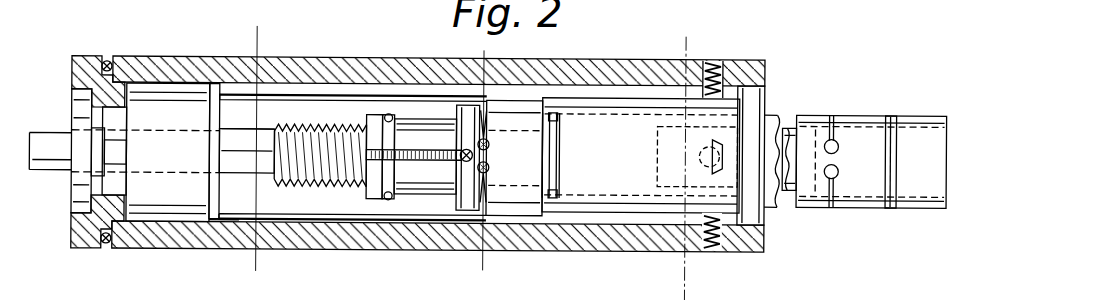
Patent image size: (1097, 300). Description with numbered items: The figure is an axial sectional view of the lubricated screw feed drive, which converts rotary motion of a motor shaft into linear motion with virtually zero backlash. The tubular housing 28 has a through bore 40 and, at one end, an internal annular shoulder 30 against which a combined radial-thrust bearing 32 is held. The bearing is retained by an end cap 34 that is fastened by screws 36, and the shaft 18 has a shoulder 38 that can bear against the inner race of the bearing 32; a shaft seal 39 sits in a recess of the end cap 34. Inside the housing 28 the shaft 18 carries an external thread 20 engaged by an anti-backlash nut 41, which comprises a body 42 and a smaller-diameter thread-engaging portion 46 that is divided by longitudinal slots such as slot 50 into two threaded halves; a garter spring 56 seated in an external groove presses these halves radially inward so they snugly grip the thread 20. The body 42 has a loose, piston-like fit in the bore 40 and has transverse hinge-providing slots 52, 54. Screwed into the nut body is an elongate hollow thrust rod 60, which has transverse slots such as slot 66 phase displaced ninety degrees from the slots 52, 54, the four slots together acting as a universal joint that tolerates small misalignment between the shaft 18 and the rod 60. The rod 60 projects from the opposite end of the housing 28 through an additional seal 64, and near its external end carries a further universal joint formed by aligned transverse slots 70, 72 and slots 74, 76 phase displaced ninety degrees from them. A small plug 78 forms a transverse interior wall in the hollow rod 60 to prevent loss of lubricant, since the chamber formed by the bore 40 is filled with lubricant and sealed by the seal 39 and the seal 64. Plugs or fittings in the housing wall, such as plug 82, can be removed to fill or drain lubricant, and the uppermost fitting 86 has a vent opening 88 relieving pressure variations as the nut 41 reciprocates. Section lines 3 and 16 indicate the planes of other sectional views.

The section line 3- 3 is at (678, 44).
The section line 16- 16 is at (250, 42).
The shaft 18 is at (46, 142).
The external thread 20 is at (312, 174).
The tubular housing 28 is at (437, 238).
The internal annular shoulder 30 is at (218, 219).
The combined radial-thrust bearing 32 is at (158, 110).
The end cap 34 is at (82, 60).
The screws 36 is at (109, 58).
The shoulder 38 is at (234, 130).
The shaft seal 39 is at (78, 178).
The through bore 40 is at (322, 107).
The anti-backlash nut 41 is at (443, 108).
The body 42 is at (523, 117).
The thread-engaging portion 46 is at (406, 124).
The longitudinal slot 50 is at (437, 160).
The transverse hinge-providing slot 52 is at (483, 100).
The transverse hinge-providing slot 54 is at (480, 168).
The garter spring 56 is at (386, 198).
The thrust rod 60 is at (602, 124).
The seal 64 is at (758, 213).
The transverse slot 66 is at (560, 182).
The transverse slot 70 is at (832, 111).
The transverse slot 72 is at (832, 208).
The transverse slot 74 is at (888, 140).
The transverse slot 76 is at (890, 162).
The plug 78 is at (786, 124).
The plug or fitting 82 is at (718, 250).
The uppermost fitting 86 is at (728, 64).
The vent opening 88 is at (716, 57).